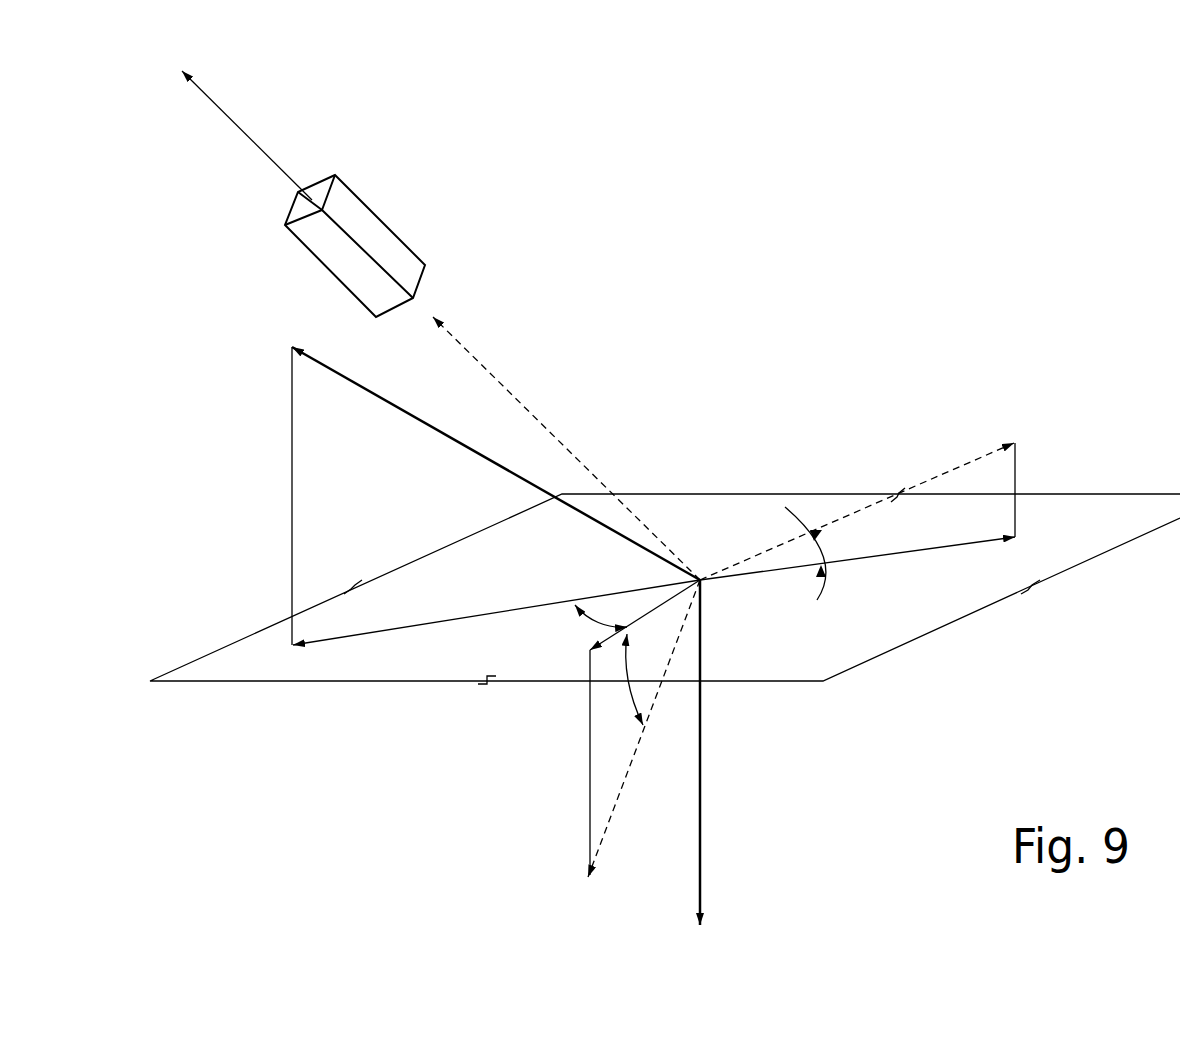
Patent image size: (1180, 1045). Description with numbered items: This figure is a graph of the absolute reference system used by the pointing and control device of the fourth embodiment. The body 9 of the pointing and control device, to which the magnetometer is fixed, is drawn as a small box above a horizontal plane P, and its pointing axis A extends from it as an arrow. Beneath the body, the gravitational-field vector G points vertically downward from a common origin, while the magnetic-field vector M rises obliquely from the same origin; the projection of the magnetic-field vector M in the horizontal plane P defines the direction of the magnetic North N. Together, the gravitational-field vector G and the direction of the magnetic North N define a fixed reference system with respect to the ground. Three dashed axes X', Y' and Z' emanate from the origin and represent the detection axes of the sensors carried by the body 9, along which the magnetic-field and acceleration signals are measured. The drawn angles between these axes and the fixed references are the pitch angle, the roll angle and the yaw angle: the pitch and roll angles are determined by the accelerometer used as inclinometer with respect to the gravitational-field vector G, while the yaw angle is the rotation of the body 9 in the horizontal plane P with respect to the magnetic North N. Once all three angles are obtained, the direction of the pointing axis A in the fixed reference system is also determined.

The body 9 is at (300, 243).
The horizontal plane P is at (1153, 507).
The pointing axis A is at (155, 108).
The magnetic-field vector M is at (232, 352).
The magnetic North N is at (496, 623).
The gravitational-field vector G is at (738, 908).
The X' axis X' is at (629, 736).
The Y' axis Y' is at (877, 496).
The Z' axis Z' is at (566, 430).